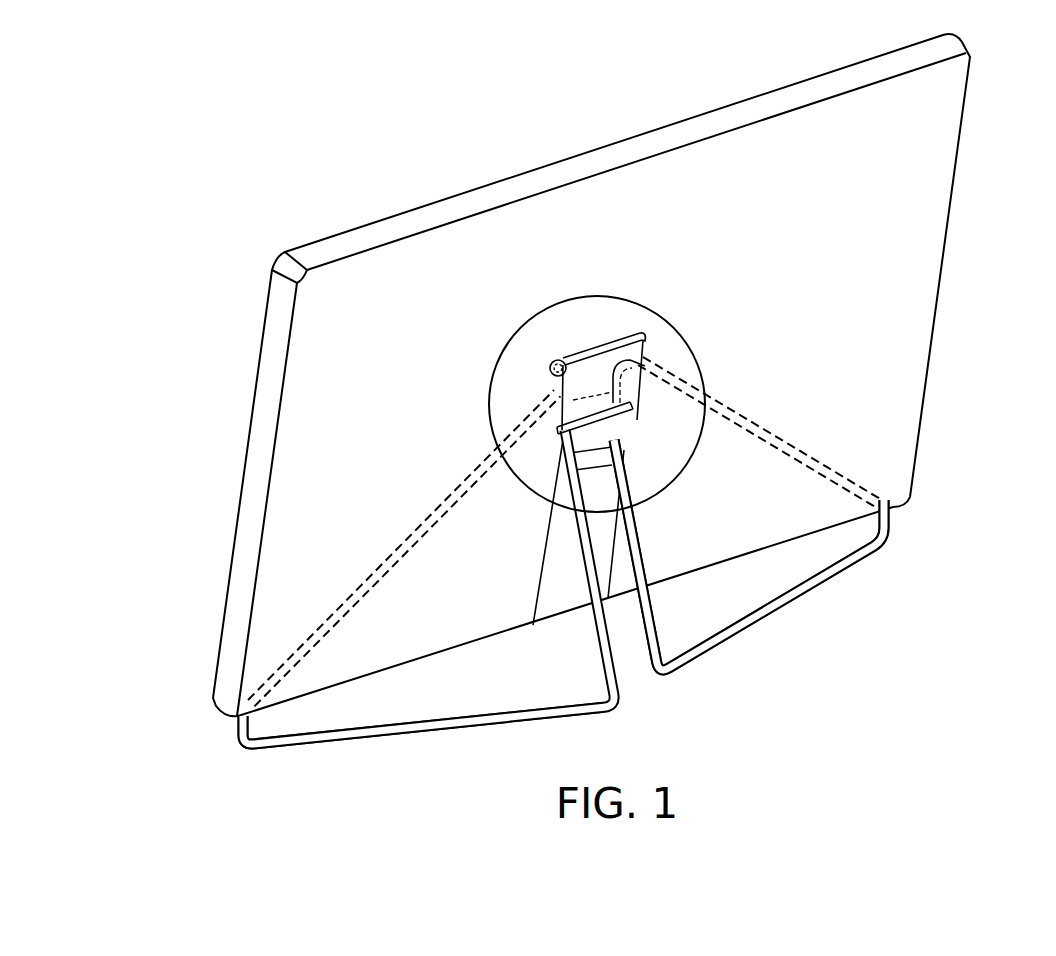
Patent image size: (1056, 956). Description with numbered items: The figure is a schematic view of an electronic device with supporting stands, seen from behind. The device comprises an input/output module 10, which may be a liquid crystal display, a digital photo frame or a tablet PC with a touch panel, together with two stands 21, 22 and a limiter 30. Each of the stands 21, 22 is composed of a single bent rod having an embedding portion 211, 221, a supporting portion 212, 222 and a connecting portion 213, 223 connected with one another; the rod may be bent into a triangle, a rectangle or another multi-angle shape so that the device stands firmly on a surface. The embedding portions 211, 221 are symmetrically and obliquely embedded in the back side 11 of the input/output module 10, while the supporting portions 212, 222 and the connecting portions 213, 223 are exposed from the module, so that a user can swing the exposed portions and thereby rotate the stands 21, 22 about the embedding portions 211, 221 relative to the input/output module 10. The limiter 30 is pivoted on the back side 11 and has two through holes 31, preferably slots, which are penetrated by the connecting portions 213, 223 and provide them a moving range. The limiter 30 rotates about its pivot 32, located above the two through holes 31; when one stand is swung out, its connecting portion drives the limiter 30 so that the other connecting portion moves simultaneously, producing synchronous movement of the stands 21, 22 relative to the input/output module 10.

The input/output module 10 is at (273, 307).
The back side 11 is at (937, 190).
The stand 21 is at (800, 513).
The embedding portion 211 is at (797, 438).
The supporting portion 212 is at (806, 592).
The connecting portion 213 is at (653, 627).
The stand 22 is at (432, 599).
The embedding portion 221 is at (453, 492).
The supporting portion 222 is at (388, 733).
The connecting portion 223 is at (598, 641).
The limiter 30 is at (590, 372).
The through hole 31 is at (640, 418).
The pivot 32 is at (547, 364).